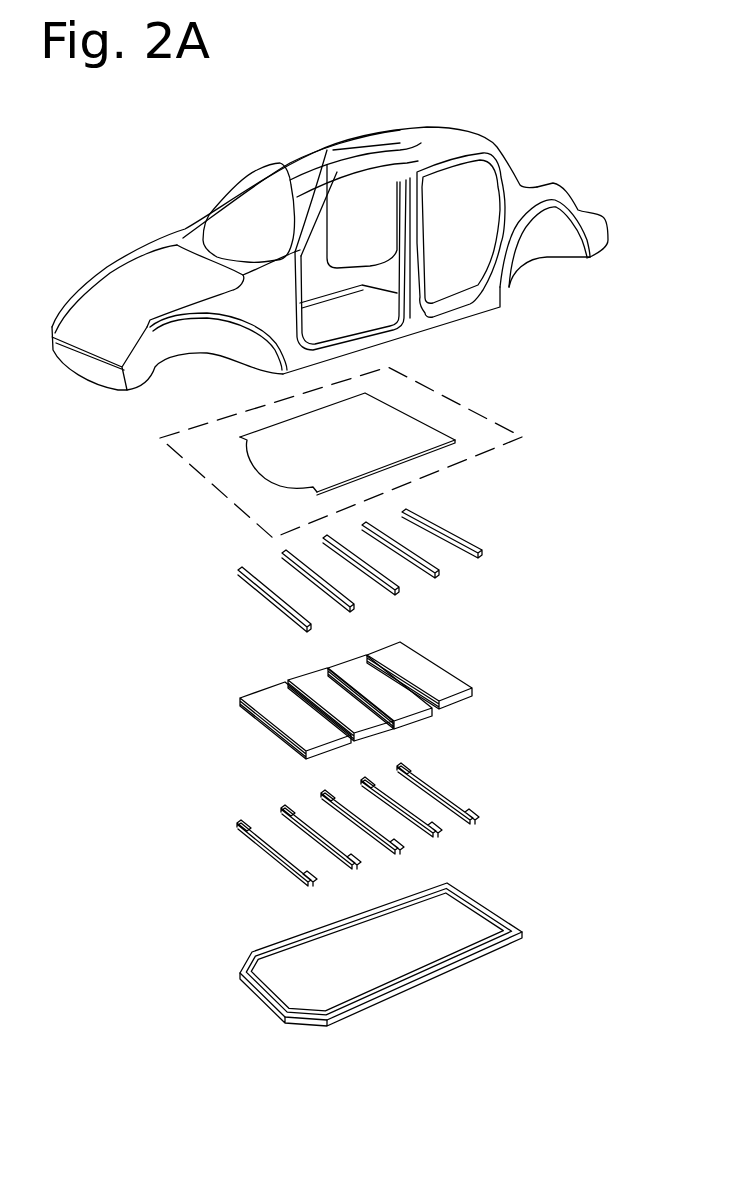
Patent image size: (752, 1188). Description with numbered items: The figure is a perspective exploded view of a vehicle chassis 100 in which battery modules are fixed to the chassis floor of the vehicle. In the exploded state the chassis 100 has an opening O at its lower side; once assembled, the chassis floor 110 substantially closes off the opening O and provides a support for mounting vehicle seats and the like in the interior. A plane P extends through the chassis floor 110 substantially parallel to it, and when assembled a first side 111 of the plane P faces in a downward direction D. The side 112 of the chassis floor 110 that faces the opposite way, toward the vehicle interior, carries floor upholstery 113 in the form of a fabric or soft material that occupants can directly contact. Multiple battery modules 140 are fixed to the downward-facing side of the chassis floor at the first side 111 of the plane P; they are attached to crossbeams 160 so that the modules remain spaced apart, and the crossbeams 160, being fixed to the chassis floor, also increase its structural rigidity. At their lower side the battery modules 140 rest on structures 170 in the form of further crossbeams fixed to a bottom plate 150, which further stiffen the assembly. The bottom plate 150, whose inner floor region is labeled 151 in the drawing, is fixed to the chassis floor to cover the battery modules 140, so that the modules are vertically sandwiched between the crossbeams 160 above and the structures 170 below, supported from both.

The vehicle chassis 100 is at (132, 210).
The chassis floor 110 is at (400, 420).
The first side of the plane 111 is at (478, 468).
The side of the chassis floor 112 is at (250, 460).
The floor upholstery 113 is at (350, 449).
The battery modules 140 is at (260, 698).
The bottom plate 150 is at (477, 927).
The tray bottom 151 is at (372, 968).
The crossbeams 160 is at (428, 567).
The structures 170 is at (433, 816).
The opening O is at (353, 300).
The plane P is at (507, 433).
The downward direction D is at (555, 681).